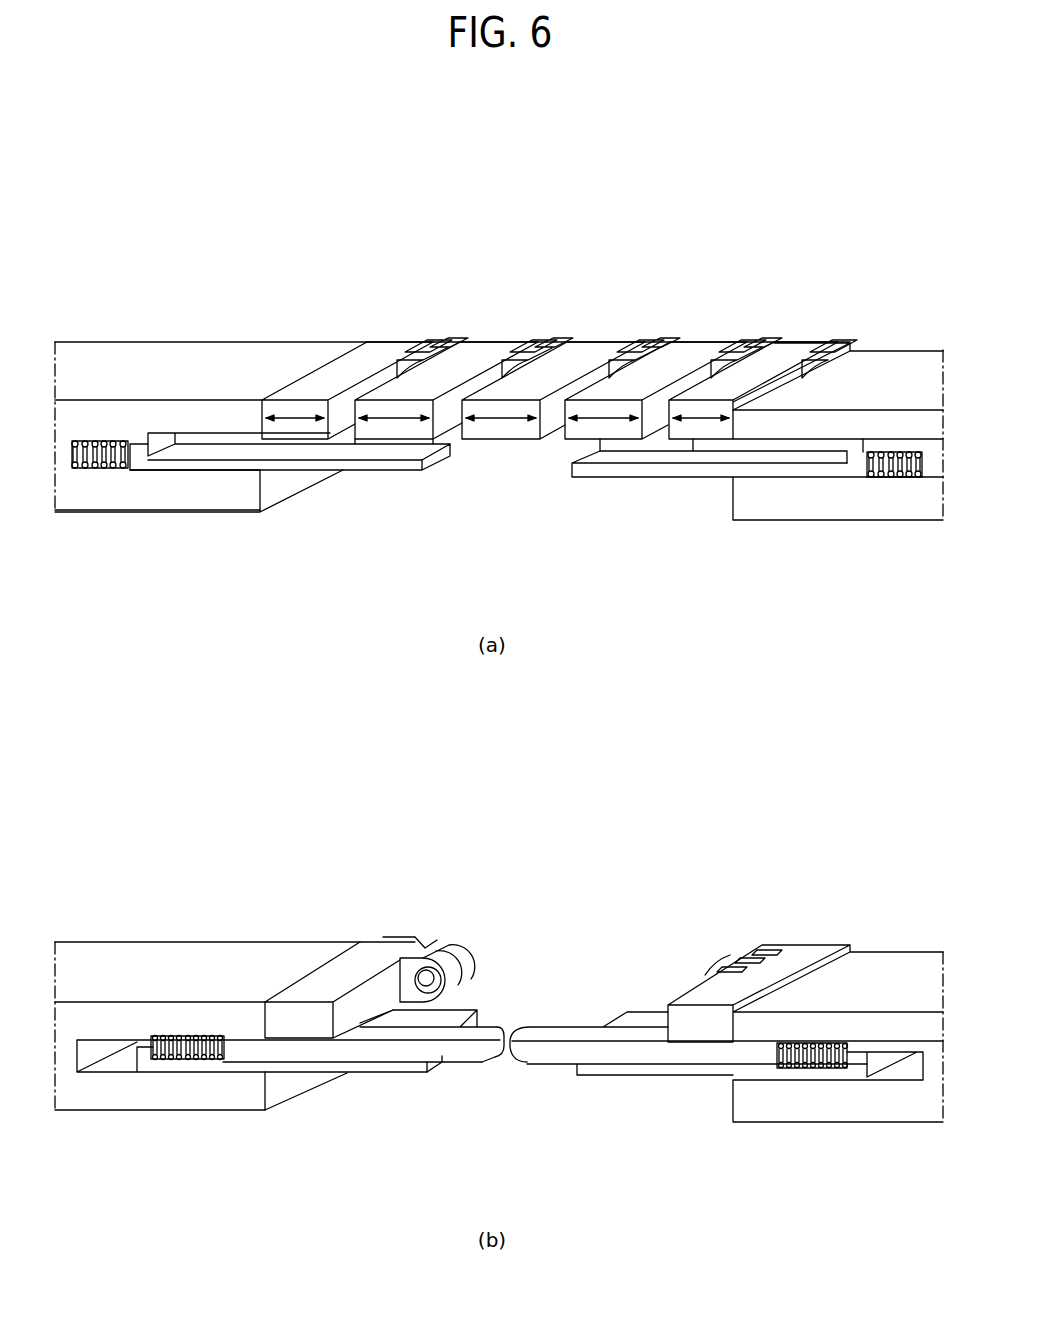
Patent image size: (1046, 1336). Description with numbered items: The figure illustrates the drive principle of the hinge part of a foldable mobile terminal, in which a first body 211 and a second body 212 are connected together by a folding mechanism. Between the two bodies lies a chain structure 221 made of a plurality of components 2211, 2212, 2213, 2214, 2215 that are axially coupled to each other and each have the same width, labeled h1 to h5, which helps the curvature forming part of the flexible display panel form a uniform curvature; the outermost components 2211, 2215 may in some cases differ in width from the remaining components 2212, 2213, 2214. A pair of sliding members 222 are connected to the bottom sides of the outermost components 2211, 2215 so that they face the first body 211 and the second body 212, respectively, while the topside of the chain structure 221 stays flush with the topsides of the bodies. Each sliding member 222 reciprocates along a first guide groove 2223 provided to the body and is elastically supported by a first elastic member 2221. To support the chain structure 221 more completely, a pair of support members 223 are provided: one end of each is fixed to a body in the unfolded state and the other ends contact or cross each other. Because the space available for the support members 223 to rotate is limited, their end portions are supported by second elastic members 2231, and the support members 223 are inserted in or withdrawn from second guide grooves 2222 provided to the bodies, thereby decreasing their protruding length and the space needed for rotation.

The first body 211 is at (247, 378).
The second body 212 is at (878, 368).
The chain structure 221 is at (767, 248).
The component 2211 is at (363, 368).
The component 2212 is at (462, 368).
The component 2213 is at (573, 368).
The component 2214 is at (680, 368).
The component 2215 is at (785, 368).
The sliding member 222 is at (225, 465).
The first elastic member 2221 is at (108, 468).
The second guide groove 2222 is at (247, 438).
The first guide groove 2223 is at (90, 482).
The support member 223 is at (345, 1052).
The second elastic member 2231 is at (195, 1053).